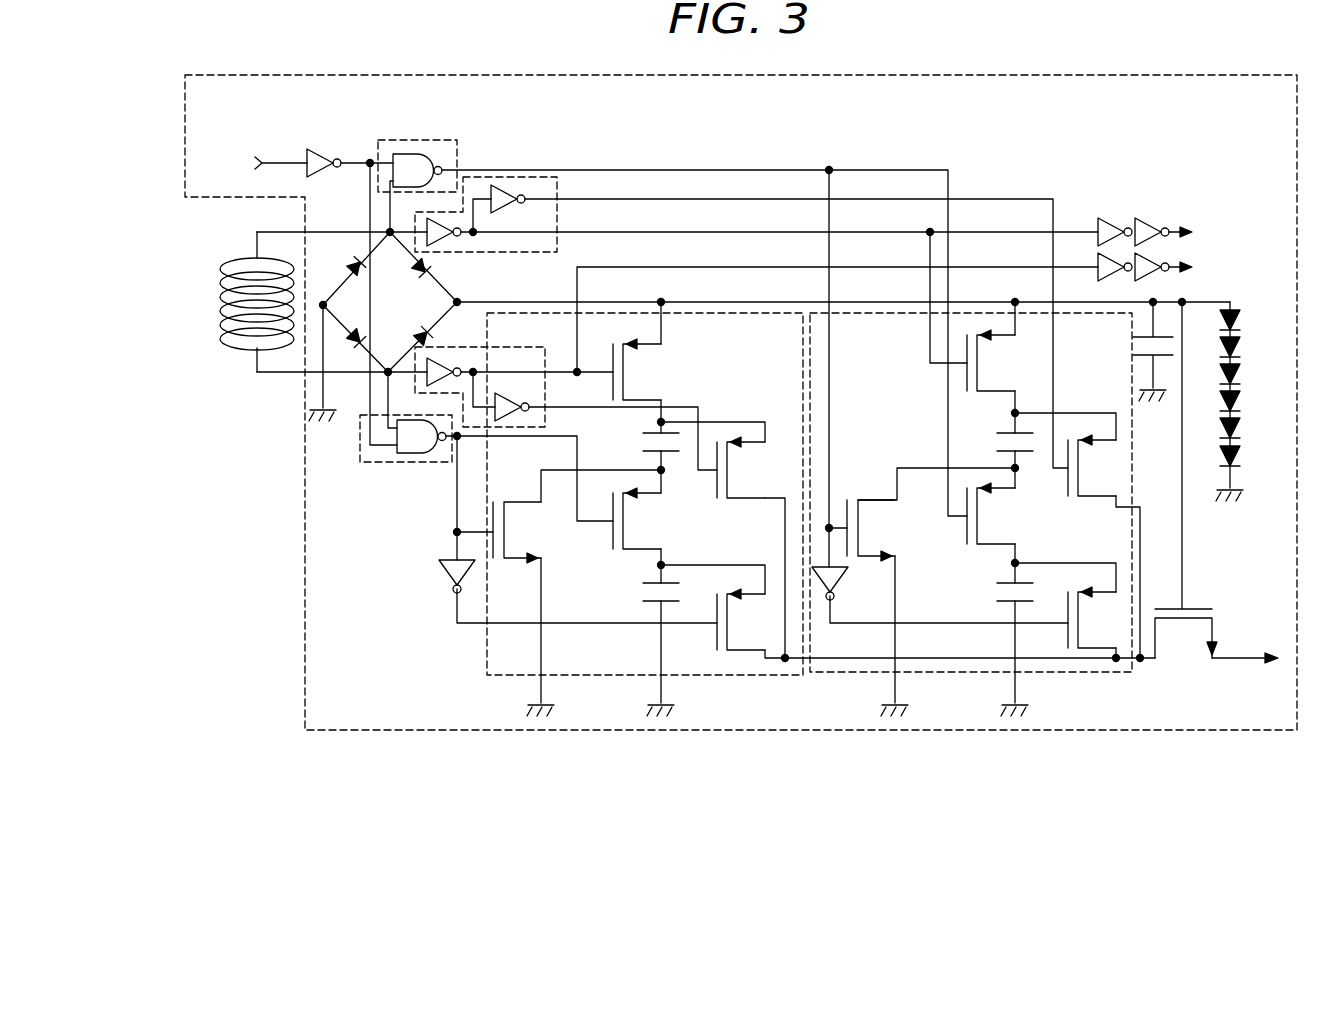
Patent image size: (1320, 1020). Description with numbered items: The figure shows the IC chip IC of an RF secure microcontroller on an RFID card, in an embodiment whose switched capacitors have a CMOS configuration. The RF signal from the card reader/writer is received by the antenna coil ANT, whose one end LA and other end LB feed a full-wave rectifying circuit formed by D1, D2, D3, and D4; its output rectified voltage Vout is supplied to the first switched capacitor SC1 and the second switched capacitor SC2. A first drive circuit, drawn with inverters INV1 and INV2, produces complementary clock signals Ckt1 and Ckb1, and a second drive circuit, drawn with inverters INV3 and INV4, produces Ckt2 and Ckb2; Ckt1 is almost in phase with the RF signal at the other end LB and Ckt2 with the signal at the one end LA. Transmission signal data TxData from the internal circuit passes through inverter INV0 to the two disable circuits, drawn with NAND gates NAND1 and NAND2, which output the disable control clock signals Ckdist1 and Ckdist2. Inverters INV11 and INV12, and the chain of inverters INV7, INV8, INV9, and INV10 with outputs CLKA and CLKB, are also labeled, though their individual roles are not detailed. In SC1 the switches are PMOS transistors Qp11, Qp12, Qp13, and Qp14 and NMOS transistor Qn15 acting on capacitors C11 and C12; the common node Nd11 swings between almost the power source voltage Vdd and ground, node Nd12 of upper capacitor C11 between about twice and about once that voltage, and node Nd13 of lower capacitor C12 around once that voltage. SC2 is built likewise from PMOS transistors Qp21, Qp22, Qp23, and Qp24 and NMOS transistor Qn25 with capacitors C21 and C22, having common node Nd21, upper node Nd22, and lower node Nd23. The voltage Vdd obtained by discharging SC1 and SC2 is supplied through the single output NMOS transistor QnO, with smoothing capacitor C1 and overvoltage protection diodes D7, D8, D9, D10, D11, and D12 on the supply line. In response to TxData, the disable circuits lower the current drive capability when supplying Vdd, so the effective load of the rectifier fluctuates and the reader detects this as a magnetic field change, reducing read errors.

The IC chip IC is at (741, 402).
The transmission signal data TxData is at (249, 163).
The inverter INV0 is at (342, 148).
The NAND gate NAND1 is at (414, 299).
The inverter INV1 is at (455, 248).
The inverter INV2 is at (512, 208).
The disable control clock signal Ckdist1 is at (699, 170).
The clock signal Ckb1 is at (699, 199).
The clock signal Ckt1 is at (699, 232).
The one end of the antenna coil LA is at (342, 220).
The other end of the antenna coil LB is at (342, 386).
The antenna coil ANT is at (235, 302).
The full-wave rectifying circuit diode D1 is at (423, 269).
The full-wave rectifying circuit diode D2 is at (422, 337).
The full-wave rectifying circuit diode D3 is at (355, 268).
The full-wave rectifying circuit diode D4 is at (355, 338).
The output rectified voltage Vout is at (464, 302).
The inverter INV3 is at (454, 355).
The inverter INV4 is at (508, 396).
The clock signal Ckt2 is at (563, 368).
The clock signal Ckb2 is at (536, 408).
The NAND gate NAND2 is at (424, 422).
The disable control clock signal Ckdist2 is at (457, 518).
The inverter INV12 is at (555, 591).
The second switched capacitor SC2 is at (785, 352).
The first switched capacitor SC1 is at (890, 350).
The PMOS transistor Qp21 is at (643, 362).
The connection node of the upper capacitor Nd22 is at (664, 421).
The capacitor C21 is at (644, 446).
The common connection node Nd21 is at (556, 469).
The PMOS transistor Qp23 is at (751, 547).
The NMOS transistor Qn25 is at (523, 609).
The PMOS transistor Qp22 is at (644, 517).
The connection node of the lower capacitor Nd23 is at (664, 565).
The capacitor C22 is at (644, 640).
The PMOS transistor Qp24 is at (751, 623).
The NMOS transistor Qn15 is at (868, 443).
The inverter INV11 is at (940, 595).
The common connection node Nd11 is at (908, 467).
The capacitor C11 is at (996, 440).
The connection node of the upper capacitor Nd12 is at (1018, 410).
The PMOS transistor Qp11 is at (998, 357).
The PMOS transistor Qp12 is at (998, 515).
The PMOS transistor Qp13 is at (1104, 546).
The connection node of the lower capacitor Nd13 is at (1020, 562).
The capacitor C12 is at (996, 639).
The PMOS transistor Qp14 is at (1100, 622).
The output NMOS transistor QnO is at (1186, 489).
The power source voltage Vdd is at (1245, 646).
The inverter INV7 is at (1110, 215).
The inverter INV8 is at (1158, 215).
The clock output A CLKA is at (1206, 231).
The inverter INV9 is at (854, 312).
The inverter INV10 is at (1171, 275).
The clock output B CLKB is at (1206, 266).
The smoothing capacitor C1 is at (1157, 351).
The overvoltage protection diode D7 is at (1245, 320).
The overvoltage protection diode D8 is at (1245, 347).
The overvoltage protection diode D9 is at (1245, 374).
The overvoltage protection diode D10 is at (1250, 401).
The overvoltage protection diode D11 is at (1250, 429).
The overvoltage protection diode D12 is at (1250, 457).